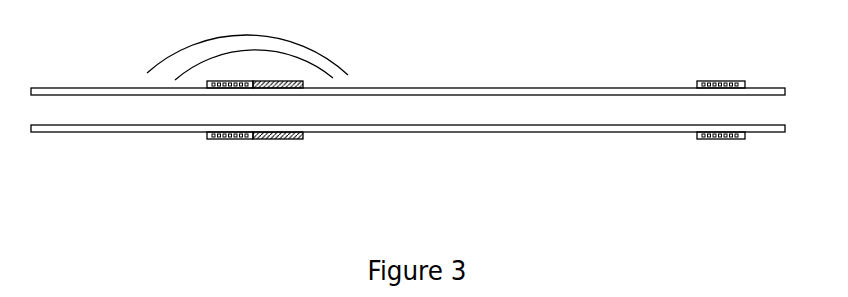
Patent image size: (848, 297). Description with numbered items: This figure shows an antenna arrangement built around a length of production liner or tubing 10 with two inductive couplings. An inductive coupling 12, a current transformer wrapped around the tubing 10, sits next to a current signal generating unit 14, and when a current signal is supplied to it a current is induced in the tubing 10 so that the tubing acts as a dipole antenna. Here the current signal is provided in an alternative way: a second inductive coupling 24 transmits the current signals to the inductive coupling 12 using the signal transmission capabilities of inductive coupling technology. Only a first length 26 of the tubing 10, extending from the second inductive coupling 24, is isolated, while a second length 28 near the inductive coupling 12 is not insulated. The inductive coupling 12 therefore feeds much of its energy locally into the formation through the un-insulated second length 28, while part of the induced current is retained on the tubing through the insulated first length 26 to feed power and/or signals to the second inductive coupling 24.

The tubing 10 is at (80, 88).
The inductive coupling 12 is at (223, 139).
The current signal generating unit 14 is at (280, 139).
The second inductive coupling 24 is at (720, 139).
The first length 26 is at (513, 88).
The second length 28 is at (118, 132).